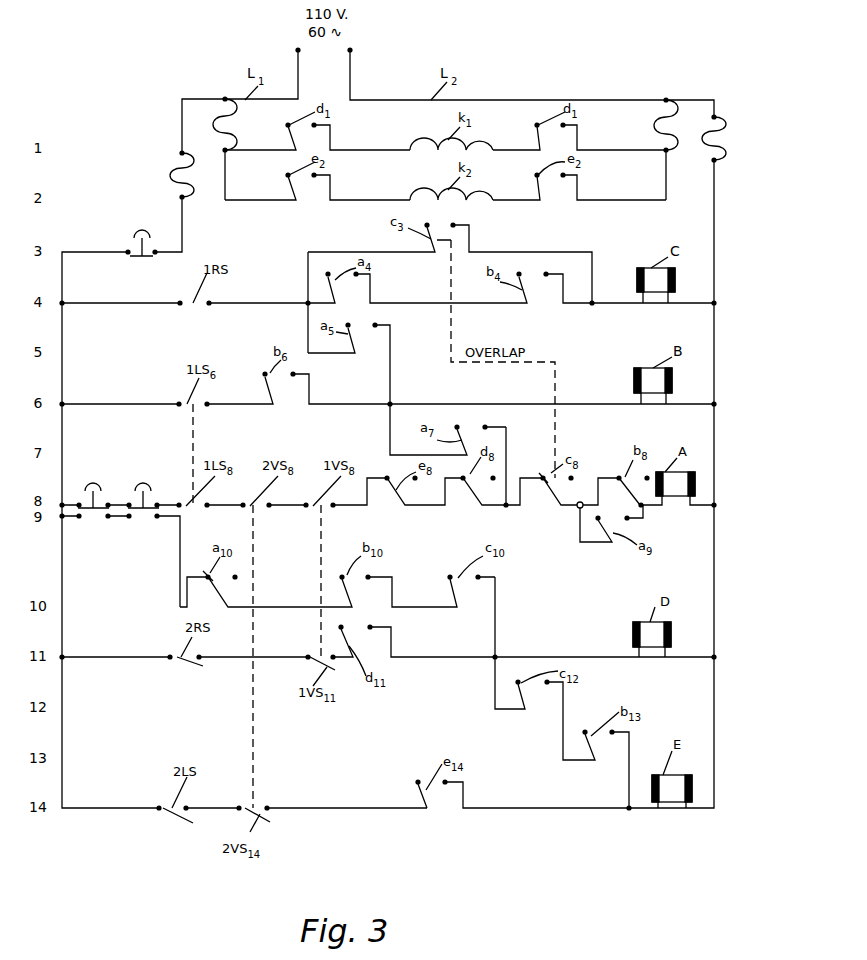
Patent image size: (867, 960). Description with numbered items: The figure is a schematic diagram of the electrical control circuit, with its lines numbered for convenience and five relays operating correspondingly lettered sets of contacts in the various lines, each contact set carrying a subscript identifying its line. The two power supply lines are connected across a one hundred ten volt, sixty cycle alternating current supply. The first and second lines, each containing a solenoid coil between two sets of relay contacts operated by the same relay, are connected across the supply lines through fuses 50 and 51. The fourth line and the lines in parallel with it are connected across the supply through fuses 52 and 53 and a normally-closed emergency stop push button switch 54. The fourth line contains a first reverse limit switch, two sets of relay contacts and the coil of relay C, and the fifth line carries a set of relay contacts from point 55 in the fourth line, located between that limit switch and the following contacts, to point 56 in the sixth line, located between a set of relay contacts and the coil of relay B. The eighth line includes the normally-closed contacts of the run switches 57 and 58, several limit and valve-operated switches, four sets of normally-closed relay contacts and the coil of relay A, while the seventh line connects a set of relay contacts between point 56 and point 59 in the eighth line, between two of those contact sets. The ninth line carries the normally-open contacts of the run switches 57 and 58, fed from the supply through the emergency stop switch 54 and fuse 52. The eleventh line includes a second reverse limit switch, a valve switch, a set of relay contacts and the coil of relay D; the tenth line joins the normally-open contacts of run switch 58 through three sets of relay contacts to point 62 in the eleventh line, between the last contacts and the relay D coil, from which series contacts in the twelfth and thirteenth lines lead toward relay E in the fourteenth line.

The fuse 50 is at (233, 121).
The fuse 51 is at (669, 122).
The fuse 52 is at (171, 181).
The fuse 53 is at (704, 152).
The emergency stop push button switch 54 is at (142, 256).
The point in line 4 55 is at (306, 305).
The point in line 6 56 is at (392, 403).
The run switch 57 is at (100, 485).
The run switch 58 is at (146, 485).
The point in line 8 59 is at (506, 505).
The point in line 11 62 is at (497, 656).